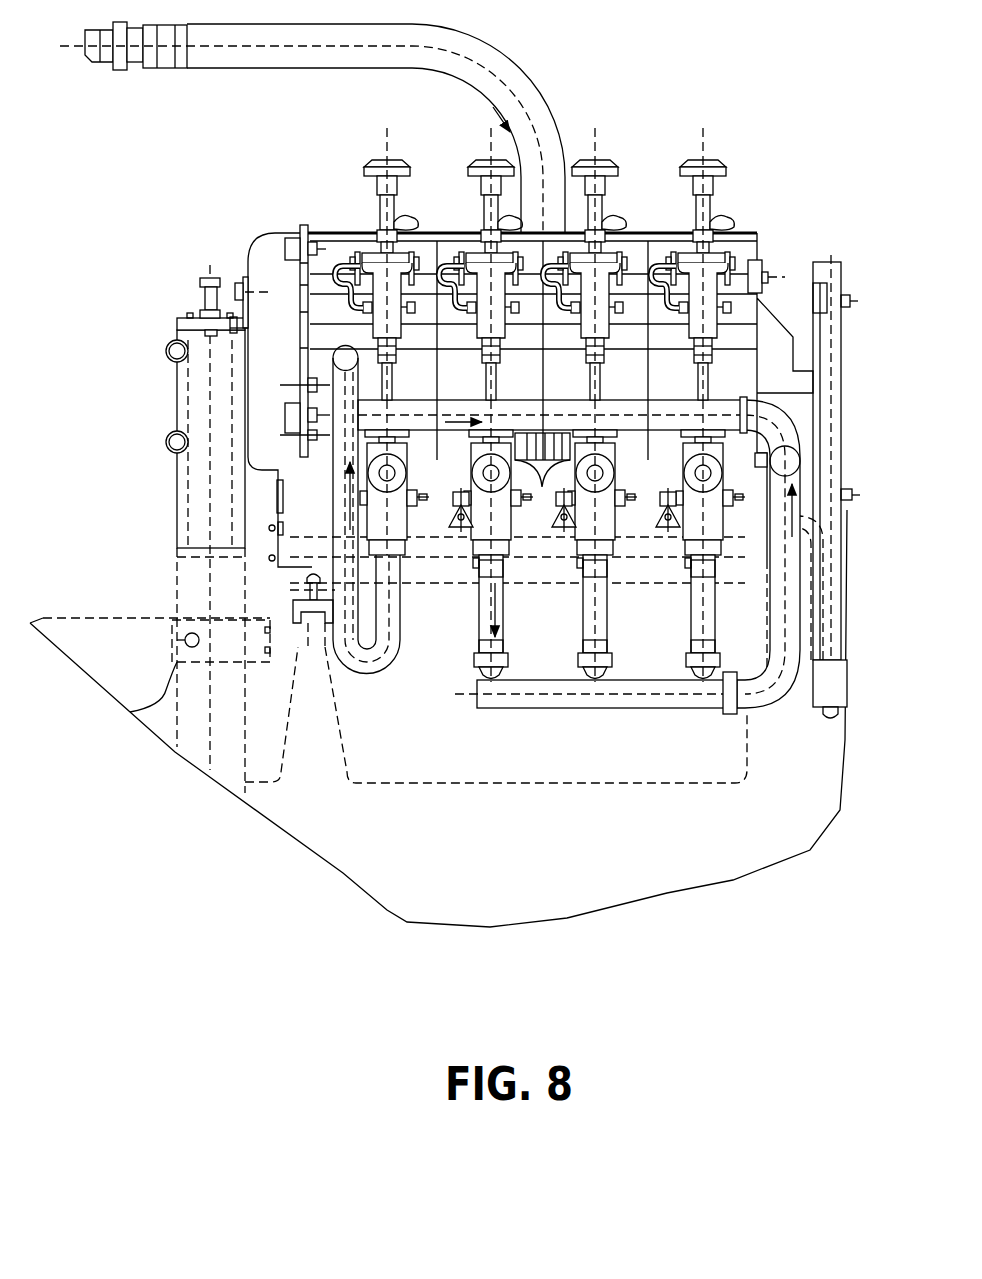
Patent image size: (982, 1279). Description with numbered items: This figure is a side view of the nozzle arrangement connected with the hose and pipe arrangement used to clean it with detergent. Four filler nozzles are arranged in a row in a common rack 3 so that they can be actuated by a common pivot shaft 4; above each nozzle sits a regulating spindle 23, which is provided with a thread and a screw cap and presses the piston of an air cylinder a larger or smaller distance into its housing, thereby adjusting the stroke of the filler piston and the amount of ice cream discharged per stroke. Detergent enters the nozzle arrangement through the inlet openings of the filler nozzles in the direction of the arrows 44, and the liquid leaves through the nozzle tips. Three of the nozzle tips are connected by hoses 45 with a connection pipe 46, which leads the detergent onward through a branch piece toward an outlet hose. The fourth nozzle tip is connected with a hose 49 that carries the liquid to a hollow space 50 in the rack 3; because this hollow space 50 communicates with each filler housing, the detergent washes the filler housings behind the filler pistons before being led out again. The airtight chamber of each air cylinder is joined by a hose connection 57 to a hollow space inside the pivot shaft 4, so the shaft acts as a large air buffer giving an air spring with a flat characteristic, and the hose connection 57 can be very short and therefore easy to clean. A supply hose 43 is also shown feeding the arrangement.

The rack 3 is at (330, 218).
The pivot shaft 4 is at (740, 265).
The regulating spindle 23 is at (725, 203).
The supply hose 43 is at (410, 42).
The arrows 44 is at (493, 107).
The hoses 45 is at (473, 620).
The connection pipe 46 is at (633, 705).
The hose 49 is at (377, 667).
The hollow space 50 is at (457, 407).
The hose connection 57 is at (655, 270).